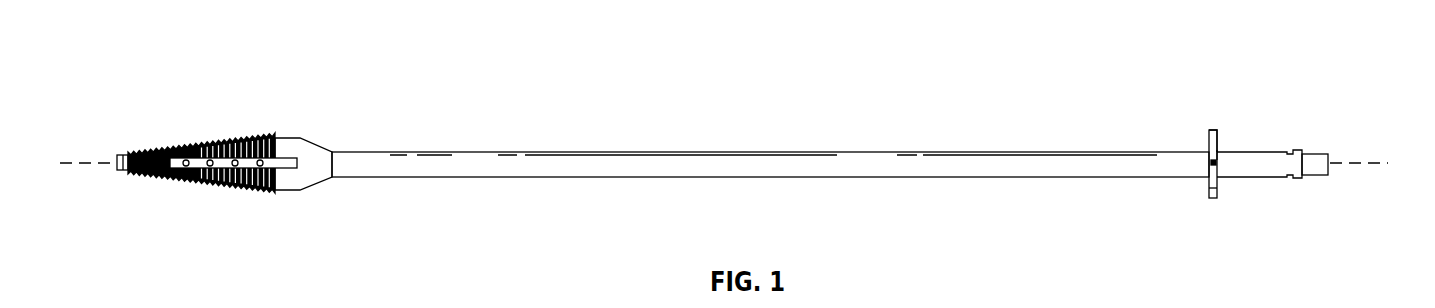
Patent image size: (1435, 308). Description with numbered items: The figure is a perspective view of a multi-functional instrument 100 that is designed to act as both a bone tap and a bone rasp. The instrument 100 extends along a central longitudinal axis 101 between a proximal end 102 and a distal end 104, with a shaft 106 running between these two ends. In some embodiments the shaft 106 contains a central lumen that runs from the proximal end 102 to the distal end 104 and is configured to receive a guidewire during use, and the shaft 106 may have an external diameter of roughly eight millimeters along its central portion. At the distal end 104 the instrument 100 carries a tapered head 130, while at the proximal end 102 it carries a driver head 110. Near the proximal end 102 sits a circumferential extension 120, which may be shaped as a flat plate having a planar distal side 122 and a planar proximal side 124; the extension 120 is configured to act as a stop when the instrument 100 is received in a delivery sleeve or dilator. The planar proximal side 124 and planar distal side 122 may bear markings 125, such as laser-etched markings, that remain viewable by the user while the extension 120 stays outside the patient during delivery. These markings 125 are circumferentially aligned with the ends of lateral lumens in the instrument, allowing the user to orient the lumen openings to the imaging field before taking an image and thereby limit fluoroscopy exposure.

The multi-functional instrument 100 is at (816, 96).
The central longitudinal axis 101 is at (1372, 166).
The proximal end 102 is at (1334, 70).
The distal end 104 is at (146, 96).
The shaft 106 is at (758, 177).
The driver head 110 is at (1315, 176).
The circumferential extension 120 is at (1209, 188).
The planar distal side 122 is at (1209, 133).
The planar proximal side 124 is at (1217, 152).
The markings 125 is at (1217, 163).
The tapered head 130 is at (233, 209).